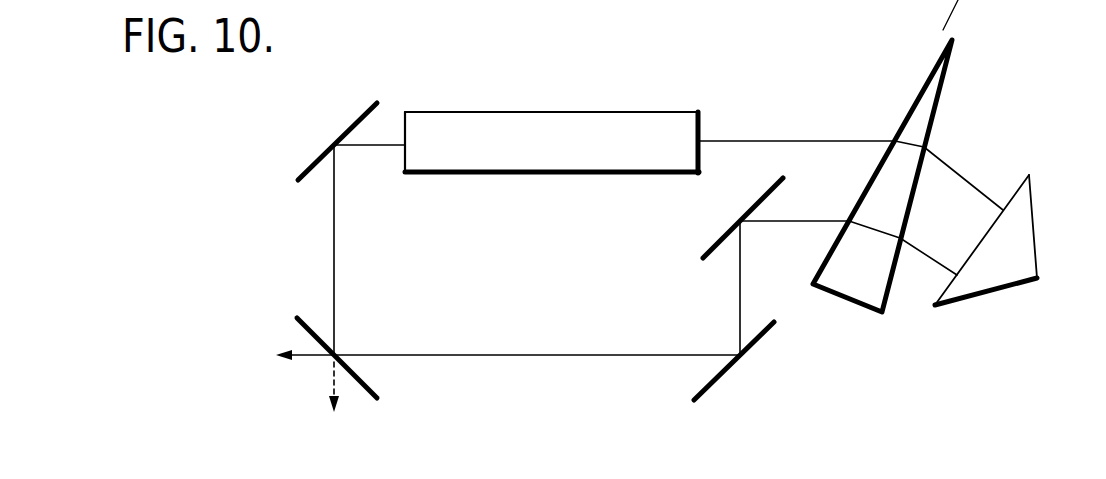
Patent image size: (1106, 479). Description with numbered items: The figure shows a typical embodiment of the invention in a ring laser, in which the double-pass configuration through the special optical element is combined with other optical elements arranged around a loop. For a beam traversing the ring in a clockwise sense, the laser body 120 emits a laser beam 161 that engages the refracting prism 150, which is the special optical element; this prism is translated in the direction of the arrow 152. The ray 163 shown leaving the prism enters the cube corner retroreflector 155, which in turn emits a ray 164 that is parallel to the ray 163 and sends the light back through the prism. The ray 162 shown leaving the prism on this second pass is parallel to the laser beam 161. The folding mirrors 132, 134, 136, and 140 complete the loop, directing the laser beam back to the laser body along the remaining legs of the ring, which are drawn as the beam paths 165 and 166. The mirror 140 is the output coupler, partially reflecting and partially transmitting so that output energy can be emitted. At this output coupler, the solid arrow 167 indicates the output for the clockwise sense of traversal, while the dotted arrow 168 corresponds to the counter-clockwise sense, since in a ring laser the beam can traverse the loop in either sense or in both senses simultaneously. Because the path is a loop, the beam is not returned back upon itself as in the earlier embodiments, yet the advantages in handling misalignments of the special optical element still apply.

The laser body 120 is at (653, 112).
The folding mirror 132 is at (303, 169).
The folding mirror 134 is at (709, 248).
The folding mirror 136 is at (757, 347).
The output coupler mirror 140 is at (297, 319).
The refracting prism 150 is at (940, 105).
The translation arrow 152 is at (951, 10).
The cube corner retroreflector 155 is at (1001, 290).
The laser beam 161 is at (818, 140).
The ray 162 is at (763, 222).
The ray 163 is at (975, 187).
The ray 164 is at (956, 239).
The beam path 165 is at (523, 355).
The beam path 166 is at (335, 270).
The solid arrow 167 is at (309, 357).
The dotted arrow 168 is at (330, 388).